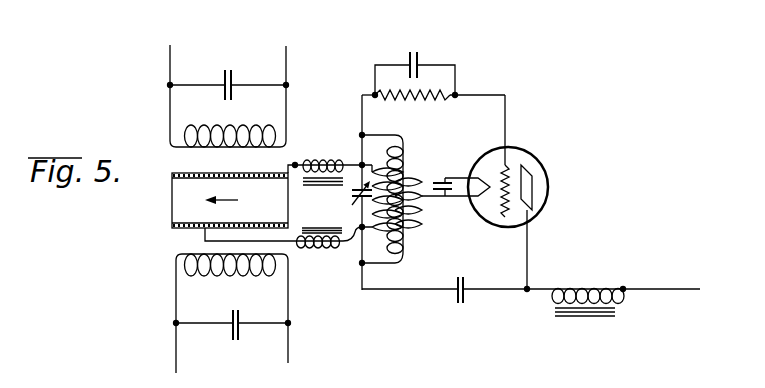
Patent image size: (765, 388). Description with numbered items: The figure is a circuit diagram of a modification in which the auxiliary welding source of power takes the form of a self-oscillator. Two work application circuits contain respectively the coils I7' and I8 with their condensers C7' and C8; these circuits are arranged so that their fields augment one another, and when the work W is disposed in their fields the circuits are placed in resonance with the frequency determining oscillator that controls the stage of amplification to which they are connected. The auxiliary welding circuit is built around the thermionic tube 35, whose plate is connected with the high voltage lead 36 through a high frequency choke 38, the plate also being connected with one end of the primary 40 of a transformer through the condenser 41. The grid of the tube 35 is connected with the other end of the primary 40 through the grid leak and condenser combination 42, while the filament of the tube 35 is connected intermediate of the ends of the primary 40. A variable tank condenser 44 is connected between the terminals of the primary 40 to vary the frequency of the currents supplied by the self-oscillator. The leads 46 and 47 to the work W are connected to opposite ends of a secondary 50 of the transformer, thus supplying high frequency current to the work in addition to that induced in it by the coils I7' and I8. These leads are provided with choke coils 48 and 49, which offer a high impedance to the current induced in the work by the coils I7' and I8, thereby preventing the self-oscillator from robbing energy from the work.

The condenser C8 is at (243, 57).
The coil I8 is at (251, 107).
The work W is at (193, 200).
The coil I7' is at (232, 313).
The condenser C7' is at (232, 333).
The lead to the work 47 is at (355, 160).
The choke coil 49 is at (306, 157).
The choke coil 48 is at (327, 246).
The variable tank condenser 44 is at (348, 197).
The primary of transformer 40 is at (405, 143).
The lead to the work 46 is at (375, 224).
The secondary of transformer 50 is at (413, 177).
The grid leak and condenser combination 42 is at (440, 77).
The thermionic tube 35 is at (527, 160).
The condenser 41 is at (469, 282).
The high frequency choke 38 is at (581, 283).
The high voltage lead 36 is at (639, 285).